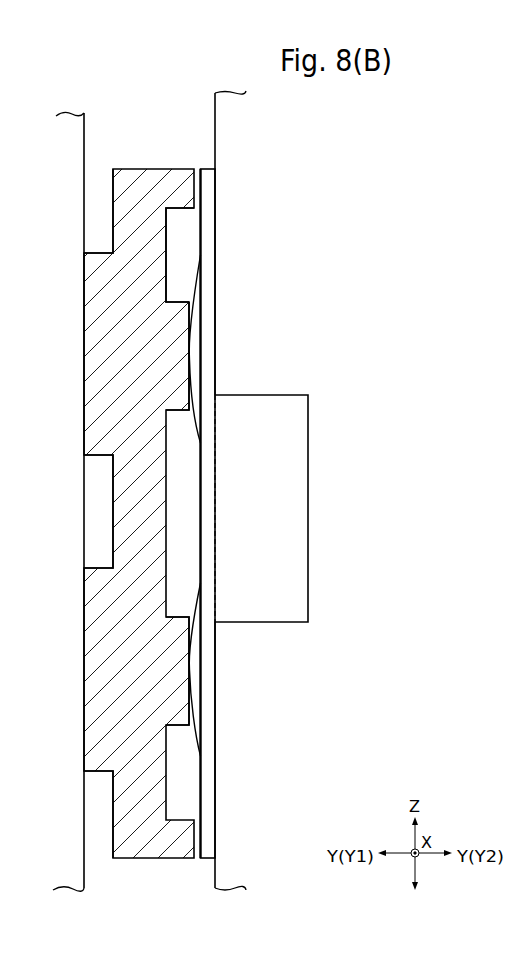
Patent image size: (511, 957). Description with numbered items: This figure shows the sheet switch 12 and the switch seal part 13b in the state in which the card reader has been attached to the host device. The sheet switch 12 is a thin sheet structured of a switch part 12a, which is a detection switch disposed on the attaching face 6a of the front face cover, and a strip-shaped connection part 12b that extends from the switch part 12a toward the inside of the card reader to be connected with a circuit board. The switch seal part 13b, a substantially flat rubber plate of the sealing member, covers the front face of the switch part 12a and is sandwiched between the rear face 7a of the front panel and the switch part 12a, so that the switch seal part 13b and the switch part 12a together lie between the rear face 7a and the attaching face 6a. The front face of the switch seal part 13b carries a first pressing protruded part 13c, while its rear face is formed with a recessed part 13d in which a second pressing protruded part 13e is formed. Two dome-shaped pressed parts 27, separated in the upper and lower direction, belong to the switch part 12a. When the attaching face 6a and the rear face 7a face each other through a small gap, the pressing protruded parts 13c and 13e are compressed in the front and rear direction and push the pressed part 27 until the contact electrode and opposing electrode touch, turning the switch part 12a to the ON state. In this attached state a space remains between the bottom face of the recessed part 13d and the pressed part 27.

The attaching face 6a is at (216, 112).
The rear face of the front panel 7a is at (86, 158).
The sheet switch 12 is at (219, 190).
The switch part 12a is at (219, 190).
The connection part 12b is at (262, 623).
The switch seal part 13b is at (167, 168).
The pressing protruded part 13c is at (99, 252).
The recessed part 13d is at (166, 243).
The pressing protruded part 13e is at (175, 300).
The pressed part 27 is at (189, 358).